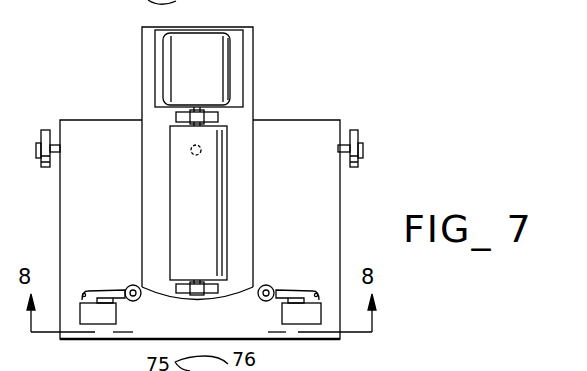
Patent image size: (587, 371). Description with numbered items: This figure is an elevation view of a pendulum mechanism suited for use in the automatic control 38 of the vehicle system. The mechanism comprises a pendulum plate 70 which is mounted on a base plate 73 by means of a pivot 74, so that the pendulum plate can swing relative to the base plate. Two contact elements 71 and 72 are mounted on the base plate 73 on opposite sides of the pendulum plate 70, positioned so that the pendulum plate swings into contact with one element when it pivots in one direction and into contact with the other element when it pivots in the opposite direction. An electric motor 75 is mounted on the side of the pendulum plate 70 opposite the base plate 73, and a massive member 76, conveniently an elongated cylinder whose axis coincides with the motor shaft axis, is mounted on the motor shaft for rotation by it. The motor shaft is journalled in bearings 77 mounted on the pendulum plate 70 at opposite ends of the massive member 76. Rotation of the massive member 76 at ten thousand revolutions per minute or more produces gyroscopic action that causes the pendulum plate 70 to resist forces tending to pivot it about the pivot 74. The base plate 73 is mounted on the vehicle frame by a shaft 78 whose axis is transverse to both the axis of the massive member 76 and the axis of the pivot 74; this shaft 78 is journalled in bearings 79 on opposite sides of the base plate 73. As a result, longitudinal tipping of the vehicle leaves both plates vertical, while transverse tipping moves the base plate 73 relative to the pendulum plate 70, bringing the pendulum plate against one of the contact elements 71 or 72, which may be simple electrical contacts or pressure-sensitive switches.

The automatic control 38 is at (293, 68).
The pendulum plate 70 is at (250, 214).
The contact element 71 is at (100, 318).
The contact element 72 is at (300, 318).
The base plate 73 is at (325, 120).
The pivot 74 is at (193, 146).
The electric motor 75 is at (199, 68).
The massive member 76 is at (198, 203).
The bearings 77 is at (218, 118).
The shaft 78 is at (56, 137).
The bearings 79 is at (46, 168).